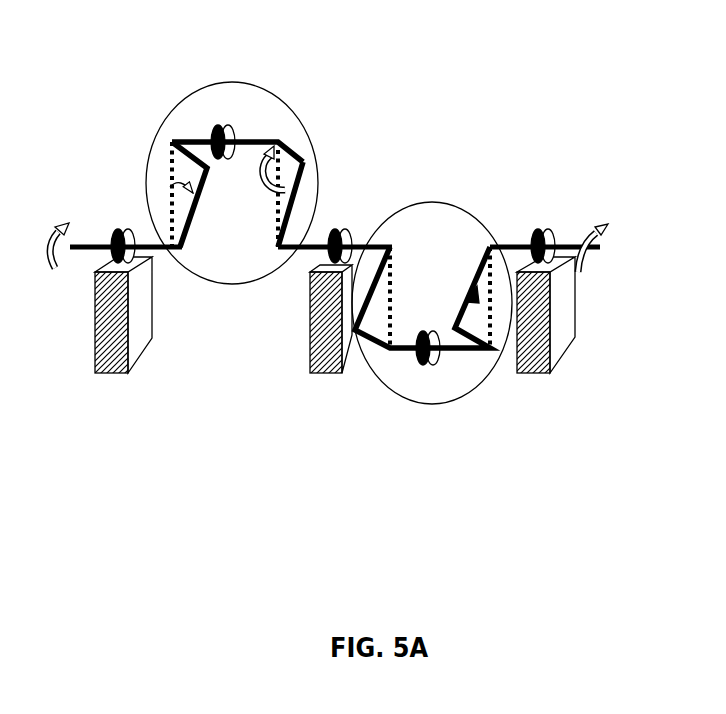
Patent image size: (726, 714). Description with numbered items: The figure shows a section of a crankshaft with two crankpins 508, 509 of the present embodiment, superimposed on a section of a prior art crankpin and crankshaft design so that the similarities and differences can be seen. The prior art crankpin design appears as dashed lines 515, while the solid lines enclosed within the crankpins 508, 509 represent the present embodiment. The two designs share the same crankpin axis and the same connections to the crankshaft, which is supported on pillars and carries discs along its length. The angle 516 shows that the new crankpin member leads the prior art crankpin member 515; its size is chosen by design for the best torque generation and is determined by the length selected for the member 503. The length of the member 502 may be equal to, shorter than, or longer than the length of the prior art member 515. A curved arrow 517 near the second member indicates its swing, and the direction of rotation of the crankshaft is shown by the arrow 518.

The member 502 is at (298, 195).
The member 503 is at (293, 145).
The crankpin 508 is at (195, 90).
The crankpin 509 is at (422, 407).
The dashed lines 515 is at (165, 157).
The angle 516 is at (182, 208).
The rotation direction arrow 517 is at (288, 167).
The direction of rotation 518 is at (588, 217).